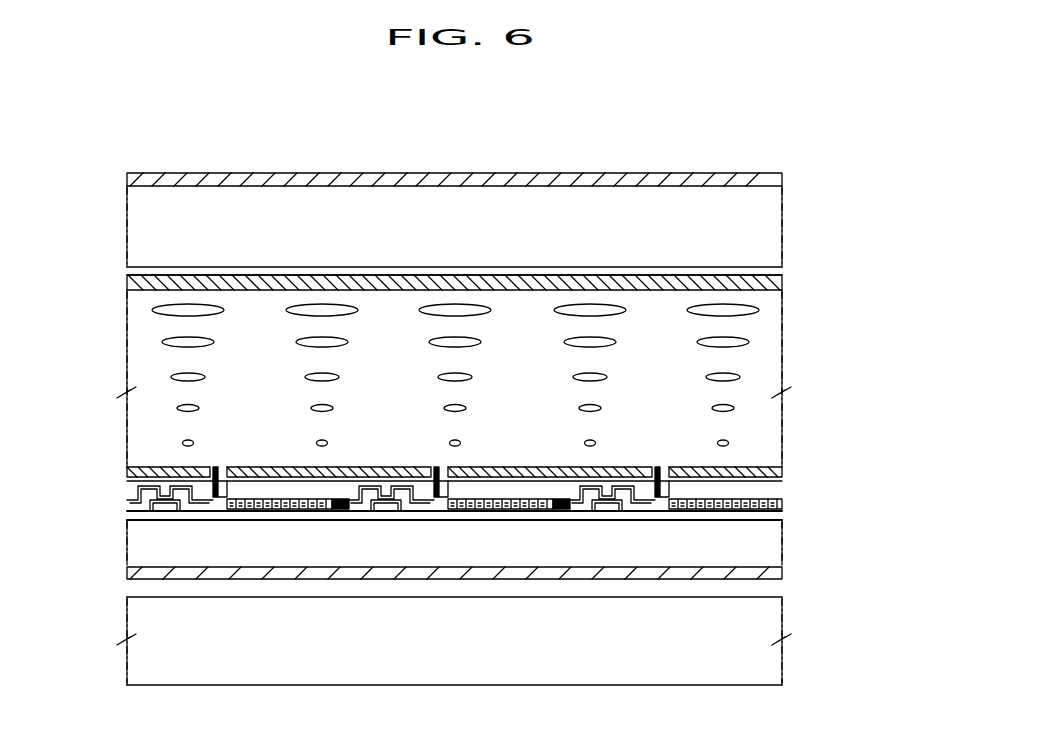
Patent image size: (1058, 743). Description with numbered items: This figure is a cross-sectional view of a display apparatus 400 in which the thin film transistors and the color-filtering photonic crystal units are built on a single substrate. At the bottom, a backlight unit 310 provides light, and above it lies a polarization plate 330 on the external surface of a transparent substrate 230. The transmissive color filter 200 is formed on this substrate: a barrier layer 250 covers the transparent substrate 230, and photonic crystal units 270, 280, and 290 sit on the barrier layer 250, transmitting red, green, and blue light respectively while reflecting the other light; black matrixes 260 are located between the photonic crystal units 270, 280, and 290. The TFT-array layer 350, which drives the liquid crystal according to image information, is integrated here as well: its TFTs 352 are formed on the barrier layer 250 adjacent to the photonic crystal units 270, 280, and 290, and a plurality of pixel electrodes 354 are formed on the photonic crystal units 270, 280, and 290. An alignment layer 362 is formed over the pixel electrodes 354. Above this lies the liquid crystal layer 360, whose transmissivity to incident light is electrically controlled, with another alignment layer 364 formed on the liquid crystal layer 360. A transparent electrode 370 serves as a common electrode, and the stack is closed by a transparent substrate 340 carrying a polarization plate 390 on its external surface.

The display apparatus 400 is at (815, 143).
The polarization plate 390 is at (782, 181).
The transparent substrate 340 is at (782, 222).
The transparent electrode 370 is at (782, 270).
The alignment layer 364 is at (782, 288).
The liquid crystal layer 360 is at (782, 411).
The alignment layer 362 is at (127, 474).
The pixel electrodes 354 is at (213, 477).
The thin film transistor (TFT)-array layer 350 is at (125, 502).
The TFTs 352 is at (200, 527).
The photonic crystal unit 270 is at (292, 512).
The photonic crystal unit 280 is at (514, 512).
The photonic crystal unit 290 is at (729, 512).
The black matrixes 260 is at (573, 512).
The barrier layer 250 is at (782, 516).
The transparent substrate 230 is at (782, 547).
The transmissive color filter 200 is at (860, 485).
The polarization plate 330 is at (782, 574).
The backlight unit 310 is at (782, 658).